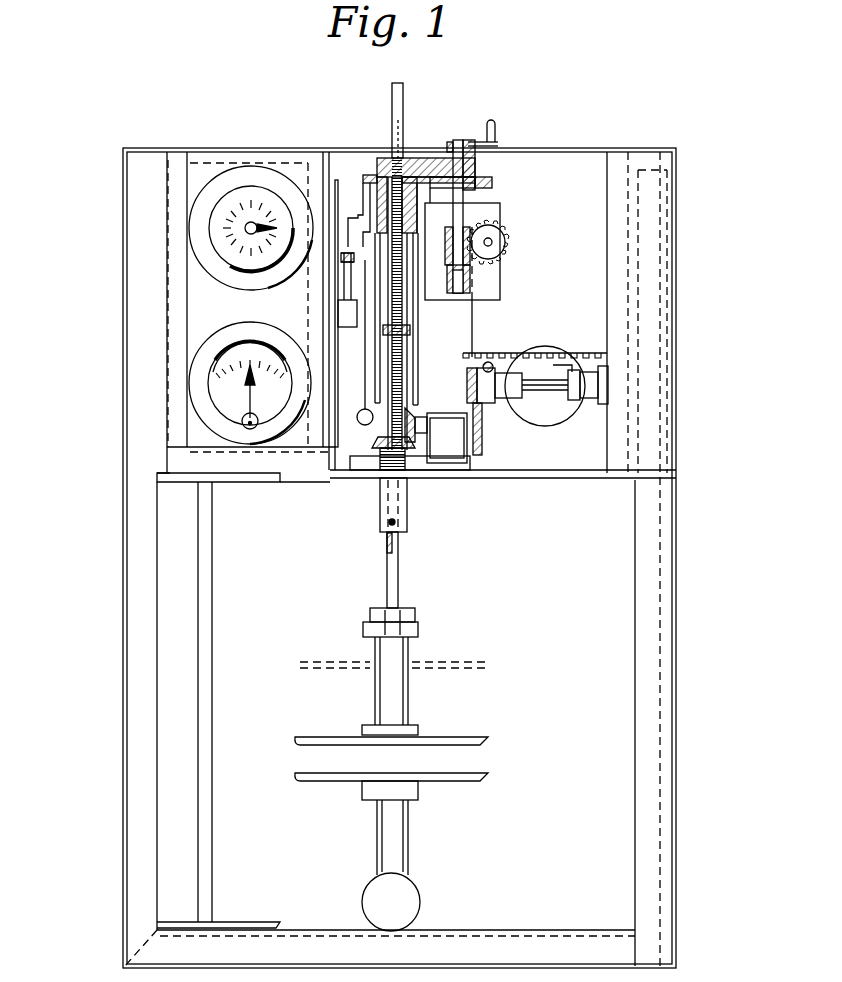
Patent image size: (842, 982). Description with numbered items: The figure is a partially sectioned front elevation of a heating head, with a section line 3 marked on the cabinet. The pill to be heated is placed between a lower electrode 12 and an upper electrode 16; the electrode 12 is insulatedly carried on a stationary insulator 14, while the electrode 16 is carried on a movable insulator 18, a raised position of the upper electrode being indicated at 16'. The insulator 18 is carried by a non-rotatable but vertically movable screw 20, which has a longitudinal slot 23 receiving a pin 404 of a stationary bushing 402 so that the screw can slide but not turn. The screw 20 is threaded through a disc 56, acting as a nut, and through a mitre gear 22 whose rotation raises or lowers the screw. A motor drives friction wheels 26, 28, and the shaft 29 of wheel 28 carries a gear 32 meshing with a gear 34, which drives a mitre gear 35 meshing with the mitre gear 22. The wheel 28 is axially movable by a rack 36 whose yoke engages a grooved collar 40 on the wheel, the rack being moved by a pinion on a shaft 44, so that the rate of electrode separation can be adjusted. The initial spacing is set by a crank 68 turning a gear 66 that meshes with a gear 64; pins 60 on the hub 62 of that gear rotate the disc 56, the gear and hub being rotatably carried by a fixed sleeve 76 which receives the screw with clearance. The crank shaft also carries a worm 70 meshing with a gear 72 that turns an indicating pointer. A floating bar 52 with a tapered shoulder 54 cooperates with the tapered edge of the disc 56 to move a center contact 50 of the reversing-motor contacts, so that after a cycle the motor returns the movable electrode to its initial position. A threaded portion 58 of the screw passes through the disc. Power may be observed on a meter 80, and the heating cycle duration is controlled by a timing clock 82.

The section line 3- 3 is at (158, 157).
The electrode 12 is at (488, 777).
The stationary insulator 14 is at (398, 845).
The electrode 16 is at (411, 738).
The plate raised position 16' is at (417, 664).
The movable insulator 18 is at (401, 697).
The screw 20 is at (396, 576).
The mitre gear 22 is at (413, 446).
The key-way or longitudinal slot 23 is at (396, 548).
The friction wheel 26 is at (556, 432).
The friction wheel 28 is at (595, 400).
The shaft 29 is at (546, 390).
The gear 32 is at (466, 376).
The gear 34 is at (484, 450).
The mitre gear 35 is at (418, 415).
The rack 36 is at (570, 324).
The grooved collar 40 is at (586, 404).
The shaft 44 is at (489, 362).
The center contact 50 is at (348, 244).
The floating bar 52 is at (363, 222).
The tapered shoulder 54 is at (376, 326).
The disc 56 is at (412, 330).
The threaded shaft 58 is at (403, 345).
The pins 60 is at (378, 372).
The hub 62 is at (458, 270).
The gear 64 is at (368, 176).
The gear 66 is at (492, 186).
The crank 68 is at (496, 130).
The worm 70 is at (449, 238).
The gear 72 is at (506, 242).
The sleeve 76 is at (403, 158).
The meter 80 is at (212, 338).
The timing clock 82 is at (272, 278).
The stationary bushing 402 is at (404, 500).
The pin 404 is at (396, 524).